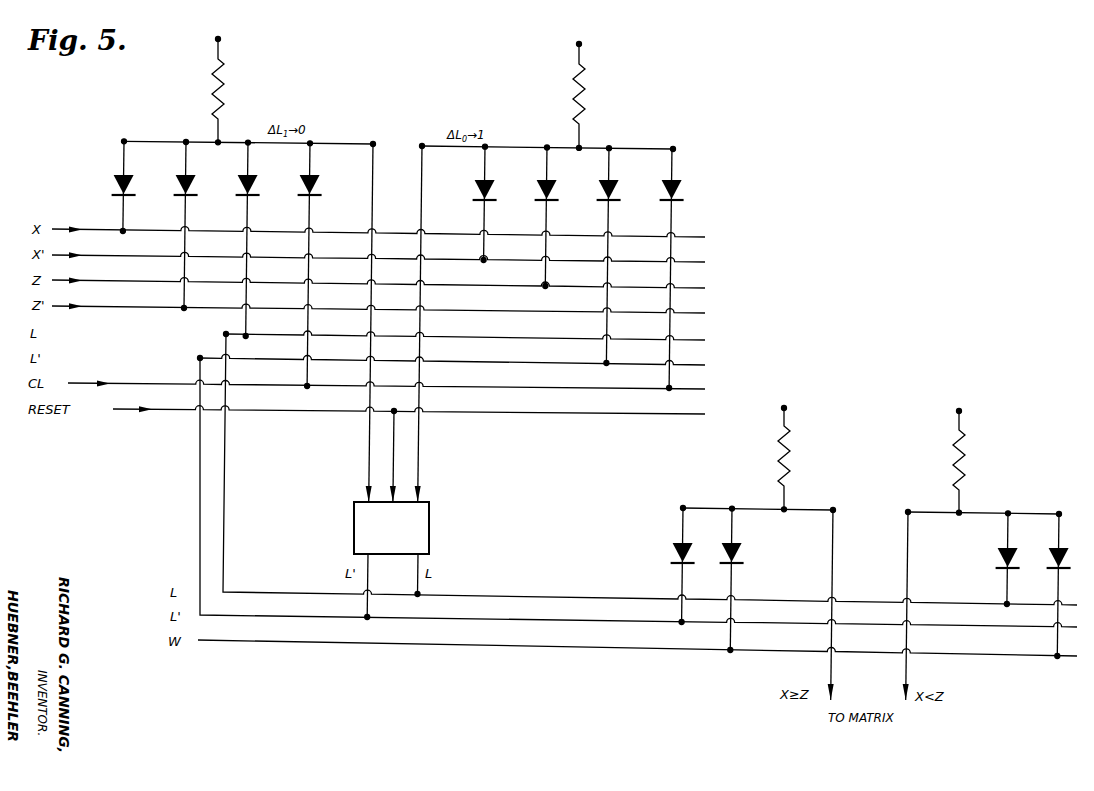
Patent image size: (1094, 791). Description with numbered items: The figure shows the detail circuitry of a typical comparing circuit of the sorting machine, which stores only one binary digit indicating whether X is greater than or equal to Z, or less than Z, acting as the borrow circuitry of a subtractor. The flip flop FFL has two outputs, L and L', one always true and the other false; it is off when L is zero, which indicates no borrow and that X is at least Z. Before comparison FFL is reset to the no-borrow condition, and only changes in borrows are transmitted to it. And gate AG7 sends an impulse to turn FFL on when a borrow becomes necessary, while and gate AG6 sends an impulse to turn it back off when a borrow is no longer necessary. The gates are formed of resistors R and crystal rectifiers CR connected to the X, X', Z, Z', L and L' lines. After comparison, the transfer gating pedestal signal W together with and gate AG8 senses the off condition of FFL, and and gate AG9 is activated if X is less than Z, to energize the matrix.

The and gate AG6 is at (234, 261).
The and gate AG7 is at (556, 263).
The and gate AG8 is at (753, 544).
The and gate AG9 is at (987, 546).
The resistor R is at (224, 81).
The crystal rectifier diode CR is at (114, 186).
The flip flop FFL is at (391, 515).